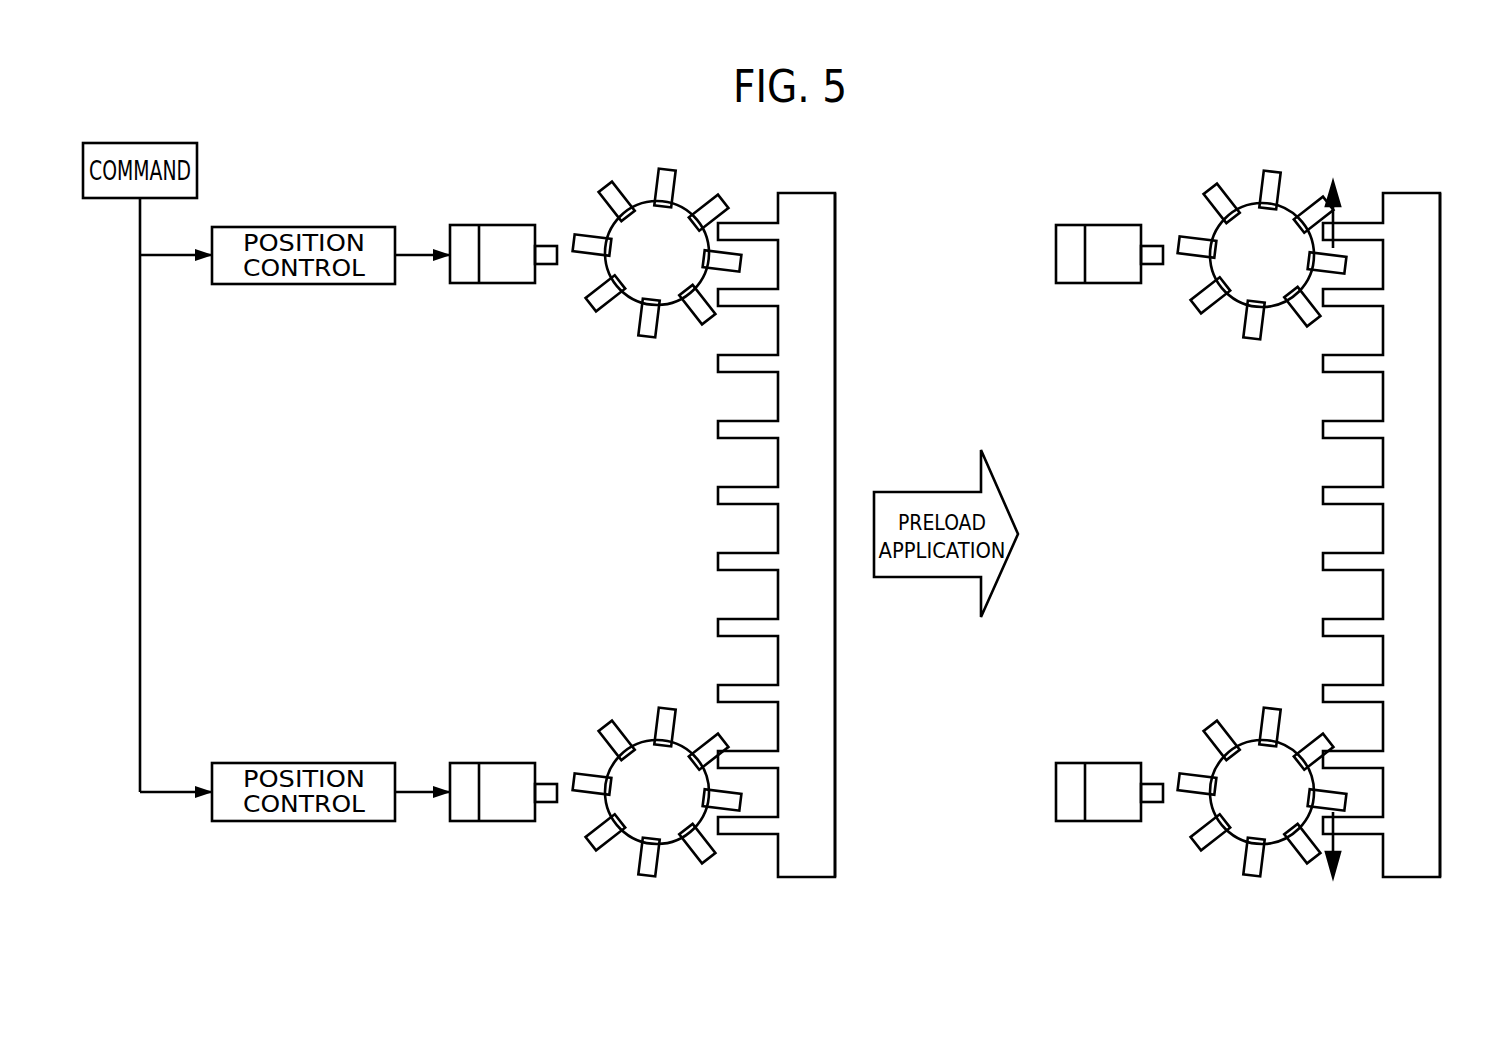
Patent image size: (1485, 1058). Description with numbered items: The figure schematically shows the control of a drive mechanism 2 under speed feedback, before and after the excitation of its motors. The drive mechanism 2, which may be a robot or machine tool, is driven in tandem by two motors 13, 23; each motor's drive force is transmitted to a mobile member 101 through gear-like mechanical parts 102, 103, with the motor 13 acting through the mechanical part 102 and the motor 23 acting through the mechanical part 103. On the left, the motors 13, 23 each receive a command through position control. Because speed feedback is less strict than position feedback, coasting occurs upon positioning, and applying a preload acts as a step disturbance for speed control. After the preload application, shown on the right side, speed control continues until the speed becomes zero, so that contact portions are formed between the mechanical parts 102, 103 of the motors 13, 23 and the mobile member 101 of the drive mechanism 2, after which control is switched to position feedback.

The drive mechanism 2 is at (778, 877).
The motor 13 is at (514, 225).
The motor 23 is at (514, 763).
The mobile member 101 is at (818, 193).
The mechanical part 102 is at (680, 200).
The mechanical part 103 is at (680, 739).